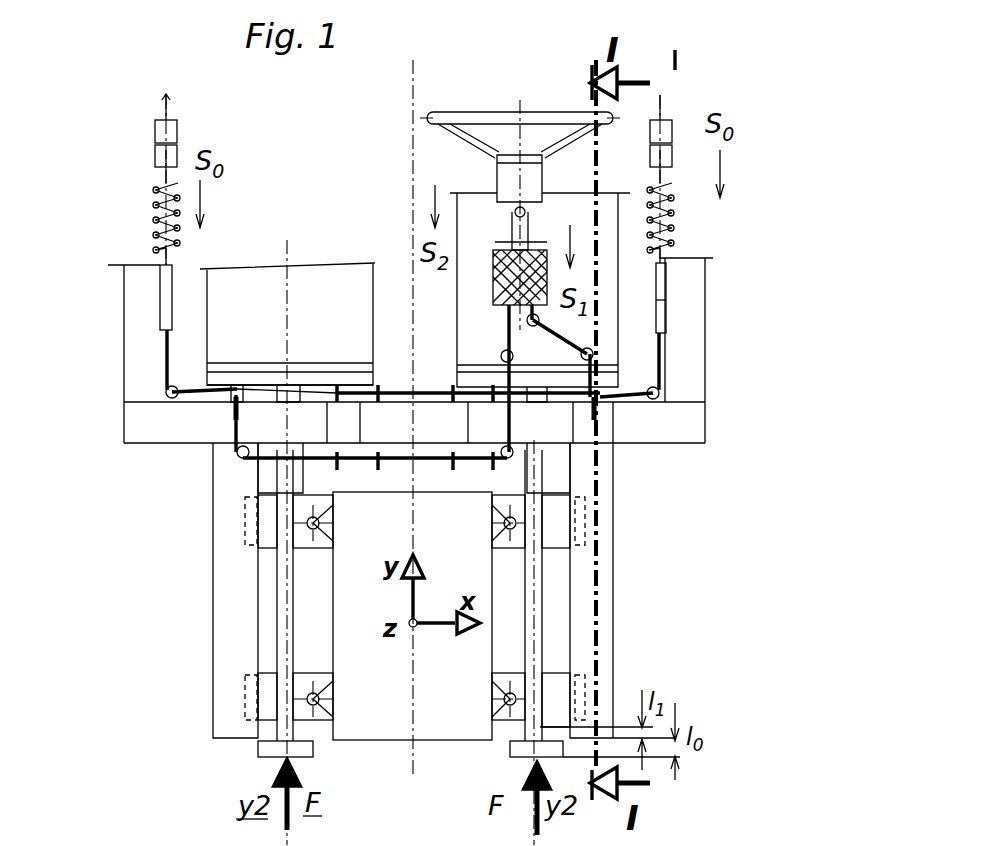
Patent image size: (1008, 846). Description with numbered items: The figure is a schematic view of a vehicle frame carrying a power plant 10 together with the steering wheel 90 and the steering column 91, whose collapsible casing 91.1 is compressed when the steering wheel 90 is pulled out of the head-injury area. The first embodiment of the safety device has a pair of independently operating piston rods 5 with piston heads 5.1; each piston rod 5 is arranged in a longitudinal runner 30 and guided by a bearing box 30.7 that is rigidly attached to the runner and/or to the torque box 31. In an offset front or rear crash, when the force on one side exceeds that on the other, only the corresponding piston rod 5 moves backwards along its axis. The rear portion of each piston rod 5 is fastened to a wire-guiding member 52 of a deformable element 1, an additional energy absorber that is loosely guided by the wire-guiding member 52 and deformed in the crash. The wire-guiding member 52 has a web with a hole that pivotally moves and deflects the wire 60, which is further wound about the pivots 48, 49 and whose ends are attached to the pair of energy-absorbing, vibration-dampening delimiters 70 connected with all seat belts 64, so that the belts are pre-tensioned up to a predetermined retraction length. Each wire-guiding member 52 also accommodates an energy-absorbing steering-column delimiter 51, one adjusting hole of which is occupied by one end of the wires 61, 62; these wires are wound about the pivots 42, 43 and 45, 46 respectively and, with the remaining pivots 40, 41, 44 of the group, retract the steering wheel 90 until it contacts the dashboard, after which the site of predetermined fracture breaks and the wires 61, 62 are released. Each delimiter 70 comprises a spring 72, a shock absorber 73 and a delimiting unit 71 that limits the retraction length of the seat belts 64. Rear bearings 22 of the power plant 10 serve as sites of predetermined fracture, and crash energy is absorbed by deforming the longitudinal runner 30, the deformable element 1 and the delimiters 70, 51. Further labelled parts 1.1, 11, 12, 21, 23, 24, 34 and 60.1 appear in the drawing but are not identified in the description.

The deformable element 1 is at (238, 308).
The housing part 1.1 is at (313, 367).
The piston rod 5 is at (287, 617).
The piston head 5.1 is at (530, 750).
The power plant 10 is at (412, 616).
The guide 11 is at (247, 685).
The guide 12 is at (248, 532).
The bearing block 21 is at (270, 720).
The rear bearing 22 is at (268, 568).
The slide block 23 is at (267, 700).
The slide block 24 is at (267, 540).
The longitudinal runner 30 is at (228, 512).
The bearing box 30.7 is at (283, 463).
The torque box 31 is at (172, 420).
The side wall 34 is at (143, 298).
The pivot 40 is at (493, 462).
The pivot 41 is at (517, 212).
The pivot 42 is at (667, 298).
The pivot 43 is at (667, 340).
The pivot 44 is at (597, 405).
The pivot 45 is at (500, 355).
The pivot 46 is at (512, 455).
The pivot 48 is at (602, 397).
The pivot 49 is at (493, 396).
The energy-absorbing steering-column delimiter 51 is at (603, 401).
The wire-guiding member 52 is at (358, 380).
The wire 60 is at (165, 358).
The lever end 60.1 is at (170, 108).
The wire 61 is at (667, 250).
The wire 62 is at (512, 330).
The seat belt 64 is at (680, 57).
The vibration-dampening, energy-absorbing delimiter 70 is at (123, 170).
The delimiting unit 71 is at (162, 265).
The spring 72 is at (160, 200).
The shock absorber 73 is at (160, 152).
The steering wheel 90 is at (450, 118).
The steering column 91 is at (512, 178).
The collapsible casing 91.1 is at (575, 112).